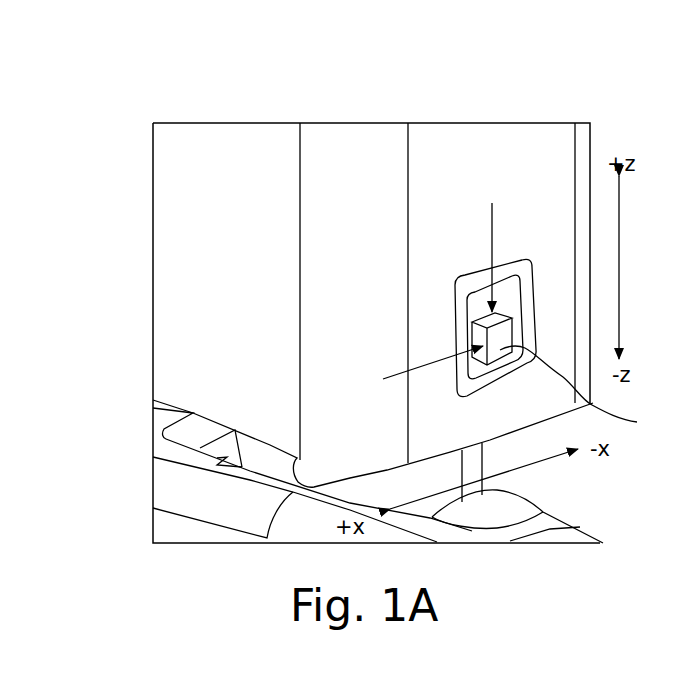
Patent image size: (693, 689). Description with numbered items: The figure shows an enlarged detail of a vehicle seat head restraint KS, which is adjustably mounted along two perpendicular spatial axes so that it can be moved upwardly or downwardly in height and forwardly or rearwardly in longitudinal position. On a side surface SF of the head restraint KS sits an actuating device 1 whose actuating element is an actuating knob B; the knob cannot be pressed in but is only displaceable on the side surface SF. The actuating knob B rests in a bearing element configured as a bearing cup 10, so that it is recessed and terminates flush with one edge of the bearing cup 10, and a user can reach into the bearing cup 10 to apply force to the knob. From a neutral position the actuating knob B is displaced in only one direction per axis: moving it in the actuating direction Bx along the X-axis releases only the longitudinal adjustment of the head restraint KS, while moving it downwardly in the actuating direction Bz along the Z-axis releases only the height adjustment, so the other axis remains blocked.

The head restraint KS is at (283, 126).
The side surface SF is at (552, 123).
The actuating device 1 is at (448, 392).
The bearing cup 10 is at (488, 300).
The actuating direction Bz is at (489, 244).
The actuating direction Bx is at (417, 370).
The actuating knob B is at (587, 391).